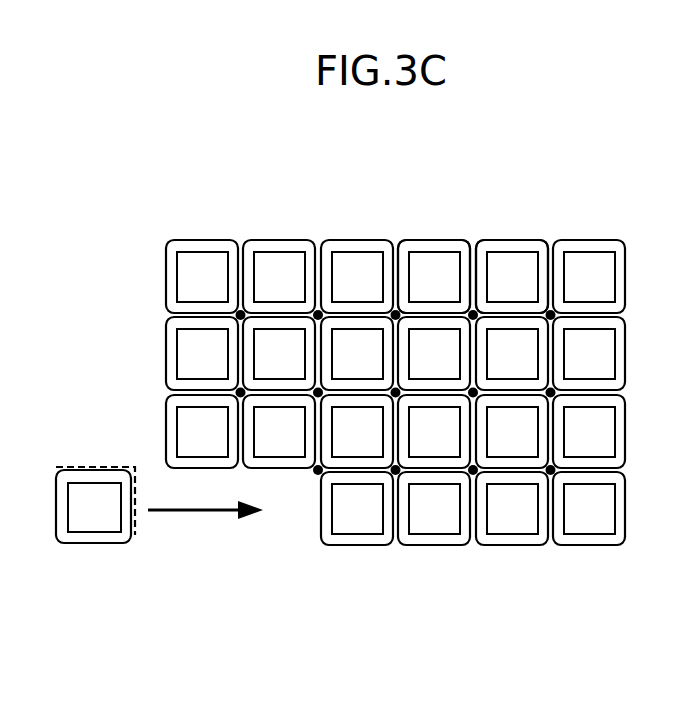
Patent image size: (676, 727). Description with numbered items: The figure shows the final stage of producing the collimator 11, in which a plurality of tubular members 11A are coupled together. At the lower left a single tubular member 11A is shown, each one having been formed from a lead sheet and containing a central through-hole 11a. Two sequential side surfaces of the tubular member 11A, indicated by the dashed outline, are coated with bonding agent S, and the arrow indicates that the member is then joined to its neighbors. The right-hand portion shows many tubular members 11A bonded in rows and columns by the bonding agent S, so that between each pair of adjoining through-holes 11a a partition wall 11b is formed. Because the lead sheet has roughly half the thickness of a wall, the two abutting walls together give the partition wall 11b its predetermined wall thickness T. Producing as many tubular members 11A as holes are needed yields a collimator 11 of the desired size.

The collimator 11 is at (176, 212).
The tubular member 11A is at (509, 236).
The through-hole 11a is at (486, 280).
The partition wall 11b is at (216, 353).
The bonding agent S is at (392, 275).
The wall thickness T is at (254, 250).